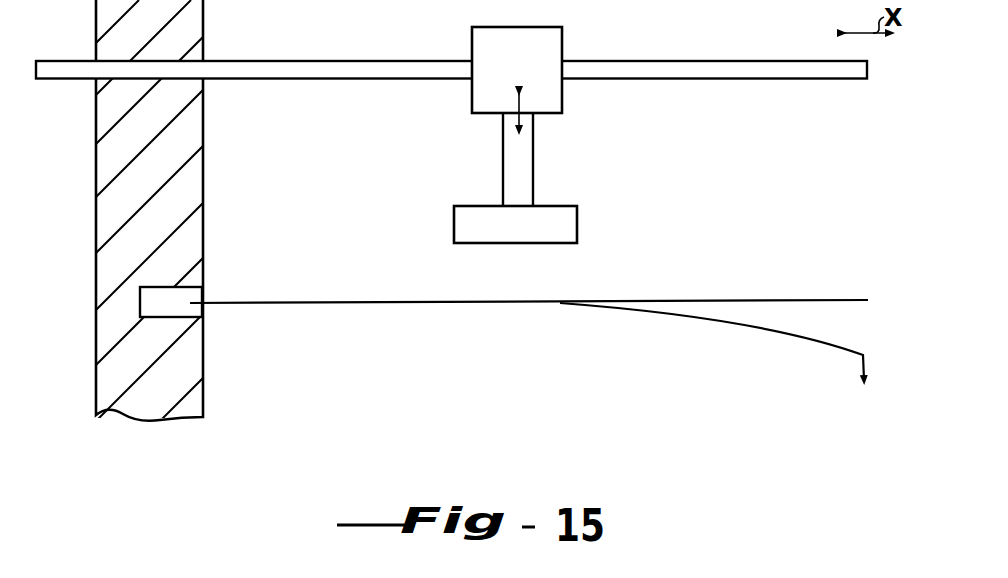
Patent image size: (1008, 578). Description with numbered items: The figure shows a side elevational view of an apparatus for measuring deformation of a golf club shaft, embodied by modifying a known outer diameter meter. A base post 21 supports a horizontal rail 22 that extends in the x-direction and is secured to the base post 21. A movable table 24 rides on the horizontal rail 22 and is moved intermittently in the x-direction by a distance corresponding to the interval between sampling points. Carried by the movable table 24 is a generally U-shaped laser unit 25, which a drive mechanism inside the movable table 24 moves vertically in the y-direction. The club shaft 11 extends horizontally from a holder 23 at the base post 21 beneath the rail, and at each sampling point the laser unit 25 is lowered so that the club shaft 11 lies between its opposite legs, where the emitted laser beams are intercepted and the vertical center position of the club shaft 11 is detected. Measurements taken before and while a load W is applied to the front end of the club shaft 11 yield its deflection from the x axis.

The club shaft 11 is at (583, 305).
The base post 21 is at (97, 231).
The horizontal rail 22 is at (728, 60).
The wire clamp block 23 is at (190, 308).
The movable table 24 is at (553, 42).
The laser unit 25 is at (574, 224).